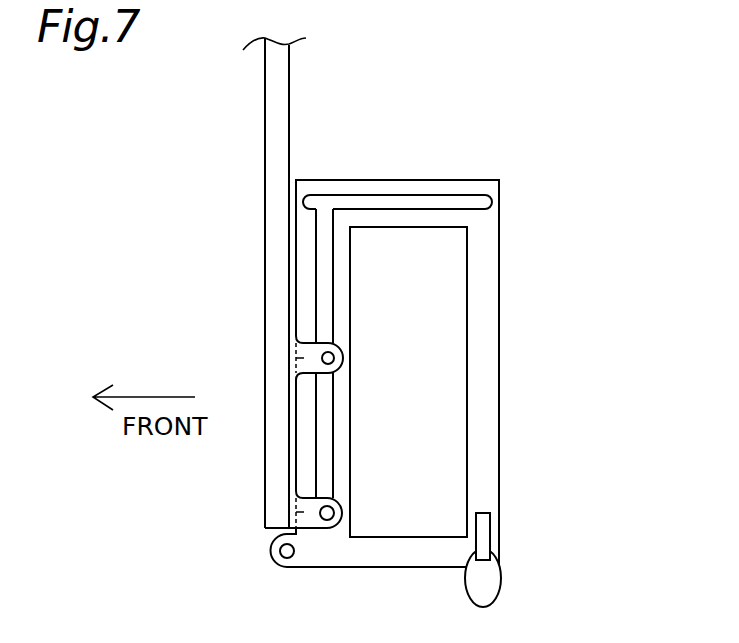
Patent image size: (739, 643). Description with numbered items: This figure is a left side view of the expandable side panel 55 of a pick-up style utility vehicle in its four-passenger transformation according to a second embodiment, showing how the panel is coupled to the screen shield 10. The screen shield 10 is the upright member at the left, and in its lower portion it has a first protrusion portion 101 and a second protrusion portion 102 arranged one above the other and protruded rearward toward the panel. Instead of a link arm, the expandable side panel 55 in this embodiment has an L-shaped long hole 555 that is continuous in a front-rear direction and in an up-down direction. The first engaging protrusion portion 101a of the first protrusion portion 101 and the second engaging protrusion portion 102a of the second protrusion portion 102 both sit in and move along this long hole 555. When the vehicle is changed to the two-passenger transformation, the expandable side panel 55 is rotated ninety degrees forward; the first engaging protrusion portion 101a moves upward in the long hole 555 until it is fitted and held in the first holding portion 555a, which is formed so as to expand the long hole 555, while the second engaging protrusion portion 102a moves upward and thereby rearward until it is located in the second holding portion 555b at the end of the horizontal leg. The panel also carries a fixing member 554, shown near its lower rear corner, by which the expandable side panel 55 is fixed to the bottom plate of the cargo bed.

The screen shield 10 is at (278, 124).
The expandable side panel 55 is at (522, 439).
The first protrusion portion 101 is at (300, 512).
The first engaging protrusion portion 101a is at (330, 507).
The second protrusion portion 102 is at (299, 358).
The second engaging protrusion portion 102a is at (341, 362).
The fixing member 554 is at (490, 530).
The L-shaped long hole 555 is at (328, 278).
The first holding portion 555a is at (306, 203).
The second holding portion 555b is at (491, 203).